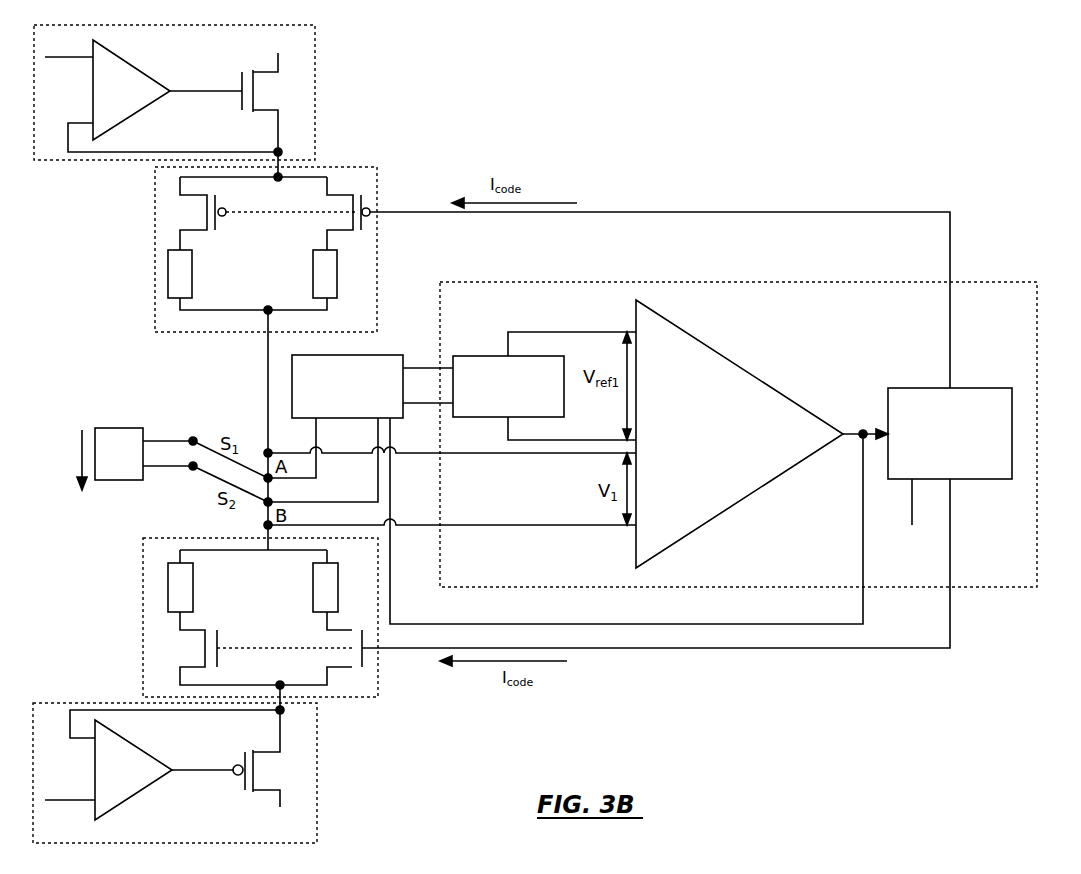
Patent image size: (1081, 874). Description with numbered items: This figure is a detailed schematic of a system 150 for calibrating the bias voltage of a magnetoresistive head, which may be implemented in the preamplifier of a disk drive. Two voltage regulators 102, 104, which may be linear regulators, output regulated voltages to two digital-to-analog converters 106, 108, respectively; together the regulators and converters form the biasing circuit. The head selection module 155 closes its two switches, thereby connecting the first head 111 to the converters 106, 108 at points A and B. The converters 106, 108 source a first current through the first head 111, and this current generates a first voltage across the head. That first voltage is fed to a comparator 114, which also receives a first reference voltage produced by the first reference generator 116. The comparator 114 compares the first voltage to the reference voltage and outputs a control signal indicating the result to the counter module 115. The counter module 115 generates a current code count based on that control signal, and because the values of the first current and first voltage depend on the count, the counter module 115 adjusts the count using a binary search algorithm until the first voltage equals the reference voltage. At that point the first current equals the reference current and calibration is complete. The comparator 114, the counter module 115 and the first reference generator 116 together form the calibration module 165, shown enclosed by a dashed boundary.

The voltage regulator 102 is at (315, 85).
The voltage regulator 104 is at (317, 785).
The digital-to-analog converter 106 is at (338, 167).
The digital-to-analog converter 108 is at (143, 577).
The first head 111 is at (120, 428).
The comparator 114 is at (712, 348).
The counter module 115 is at (975, 388).
The first reference generator 116 is at (475, 356).
The system 150 is at (748, 157).
The head selection module 155 is at (292, 389).
The calibration module 165 is at (975, 282).